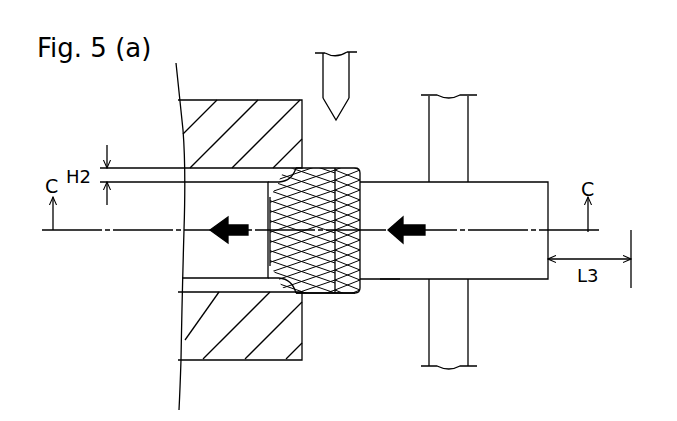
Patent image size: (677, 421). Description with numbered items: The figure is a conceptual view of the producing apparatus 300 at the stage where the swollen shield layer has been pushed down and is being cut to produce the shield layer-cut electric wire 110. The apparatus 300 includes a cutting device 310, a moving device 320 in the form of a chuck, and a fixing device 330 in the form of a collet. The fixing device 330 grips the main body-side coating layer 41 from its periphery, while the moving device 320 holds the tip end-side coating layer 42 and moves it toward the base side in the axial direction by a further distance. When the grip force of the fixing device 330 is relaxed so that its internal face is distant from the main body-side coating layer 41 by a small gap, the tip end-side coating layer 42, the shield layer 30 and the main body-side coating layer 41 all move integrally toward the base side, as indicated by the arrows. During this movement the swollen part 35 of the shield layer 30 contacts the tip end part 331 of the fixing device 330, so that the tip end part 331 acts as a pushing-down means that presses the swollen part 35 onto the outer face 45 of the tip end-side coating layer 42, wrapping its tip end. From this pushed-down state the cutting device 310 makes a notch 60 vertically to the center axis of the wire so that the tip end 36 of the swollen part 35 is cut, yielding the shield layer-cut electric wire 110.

The producing apparatus 300 is at (560, 90).
The cutting device 310 is at (340, 70).
The moving device 320 is at (457, 157).
The fixing device 330 is at (217, 117).
The tip end part 331 is at (295, 160).
The shield layer 30 is at (346, 235).
The swollen part 35 is at (320, 168).
The tip end 36 is at (352, 293).
The main body-side coating layer 41 is at (194, 258).
The tip end-side coating layer 42 is at (485, 287).
The outer face 45 is at (388, 274).
The notch 60 is at (320, 295).
The shield layer-cut electric wire 110 is at (559, 300).